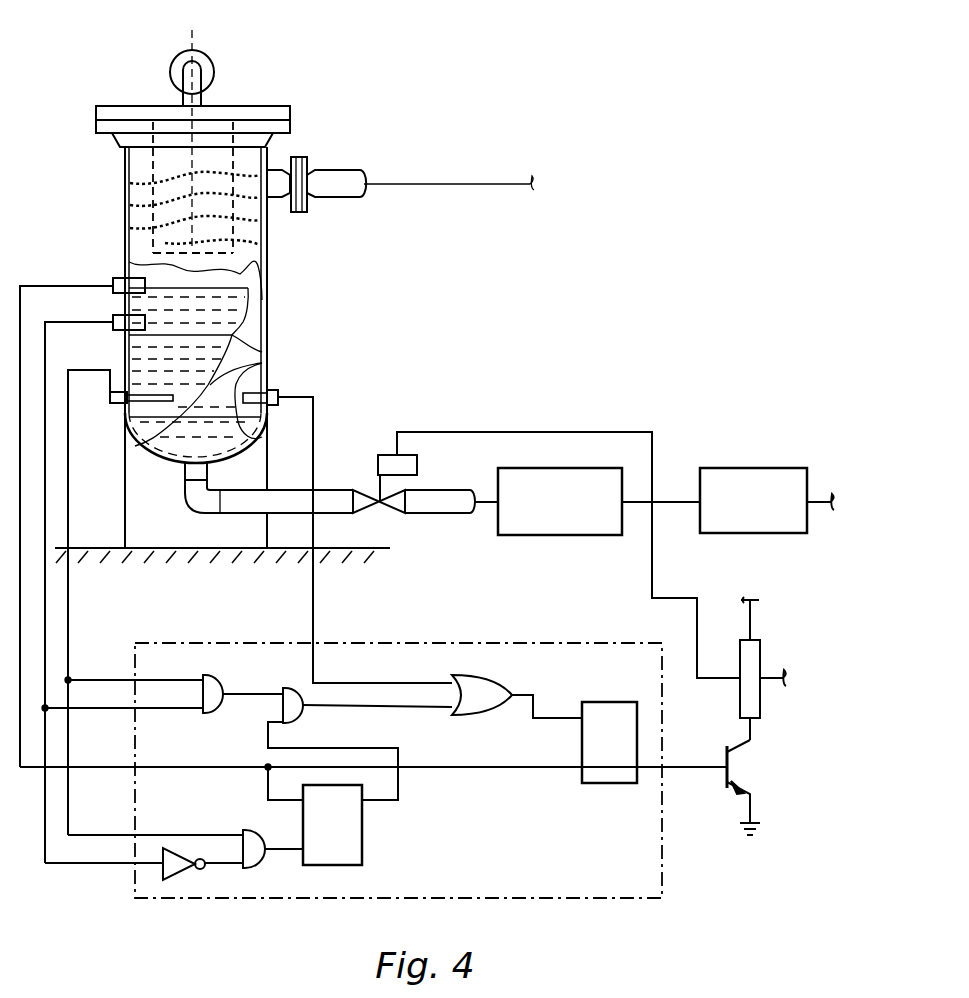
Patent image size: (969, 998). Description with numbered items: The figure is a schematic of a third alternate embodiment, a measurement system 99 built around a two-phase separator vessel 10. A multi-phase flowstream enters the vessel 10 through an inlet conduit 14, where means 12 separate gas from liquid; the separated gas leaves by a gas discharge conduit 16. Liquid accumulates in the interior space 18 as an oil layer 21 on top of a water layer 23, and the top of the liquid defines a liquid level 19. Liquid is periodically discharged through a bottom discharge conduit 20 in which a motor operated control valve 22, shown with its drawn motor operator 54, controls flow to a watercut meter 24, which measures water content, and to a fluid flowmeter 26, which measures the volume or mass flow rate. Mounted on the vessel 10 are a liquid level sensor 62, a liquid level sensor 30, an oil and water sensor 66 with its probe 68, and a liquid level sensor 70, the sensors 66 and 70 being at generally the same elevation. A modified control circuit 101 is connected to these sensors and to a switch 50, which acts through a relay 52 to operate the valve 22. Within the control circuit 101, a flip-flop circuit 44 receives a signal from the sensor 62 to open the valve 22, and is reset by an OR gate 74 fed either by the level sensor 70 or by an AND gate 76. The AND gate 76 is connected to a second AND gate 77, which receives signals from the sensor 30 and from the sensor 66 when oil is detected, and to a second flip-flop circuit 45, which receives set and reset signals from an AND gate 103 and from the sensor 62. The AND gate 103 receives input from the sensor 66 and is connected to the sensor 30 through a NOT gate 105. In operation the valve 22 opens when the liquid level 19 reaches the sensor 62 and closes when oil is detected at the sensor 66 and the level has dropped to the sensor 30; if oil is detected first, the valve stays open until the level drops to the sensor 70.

The separator vessel 10 is at (313, 137).
The means for separating gas from liquid 12 is at (160, 172).
The inlet conduit 14 is at (427, 185).
The gas discharge conduit 16 is at (213, 64).
The interior space 18 is at (205, 326).
The liquid level 19 is at (267, 277).
The bottom discharge conduit 20 is at (276, 490).
The oil layer 21 is at (230, 315).
The control valve 22 is at (395, 515).
The water layer 23 is at (217, 358).
The watercut meter 24 is at (545, 468).
The fluid flowmeter 26 is at (740, 468).
The liquid level sensor 30 is at (113, 316).
The flip-flop circuit 44 is at (592, 783).
The second flip-flop circuit 45 is at (362, 835).
The switch 50 is at (725, 783).
The relay 52 is at (740, 704).
The valve actuator 54 is at (388, 455).
The liquid level sensor 62 is at (125, 275).
The oil and water sensor 66 is at (110, 372).
The probe 68 is at (125, 421).
The liquid level sensor 70 is at (250, 383).
The OR gate 74 is at (500, 675).
The AND gate 76 is at (300, 718).
The second AND gate 77 is at (215, 713).
The measurement system 99 is at (575, 300).
The control circuit 101 is at (557, 905).
The AND gate 103 is at (258, 870).
The NOT gate 105 is at (185, 872).